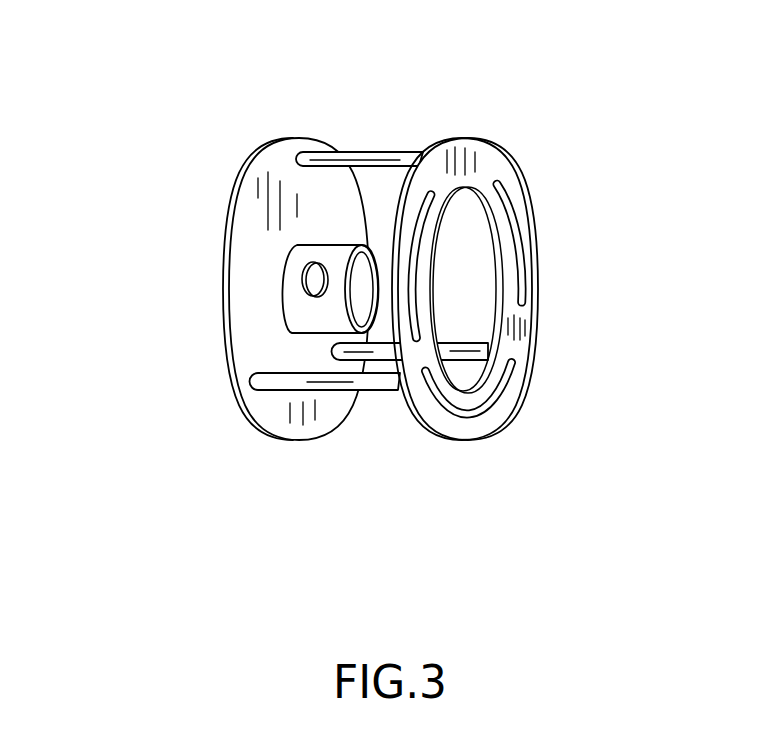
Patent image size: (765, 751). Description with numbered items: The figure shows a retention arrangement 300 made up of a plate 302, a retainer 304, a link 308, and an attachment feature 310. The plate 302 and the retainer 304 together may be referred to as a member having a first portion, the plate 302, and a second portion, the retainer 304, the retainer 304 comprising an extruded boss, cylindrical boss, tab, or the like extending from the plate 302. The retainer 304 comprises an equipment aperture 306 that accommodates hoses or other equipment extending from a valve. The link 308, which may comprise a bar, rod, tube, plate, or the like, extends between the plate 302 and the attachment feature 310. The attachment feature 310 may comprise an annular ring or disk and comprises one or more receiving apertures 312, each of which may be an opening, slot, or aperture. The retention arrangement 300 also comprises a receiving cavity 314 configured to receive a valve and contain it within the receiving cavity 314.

The retention arrangement 300 is at (335, 285).
The plate 302 is at (325, 413).
The retainer 304 is at (373, 268).
The equipment aperture 306 is at (303, 274).
The link 308 is at (385, 153).
The attachment feature 310 is at (508, 264).
The receiving aperture 312 is at (518, 228).
The receiving cavity 314 is at (372, 292).